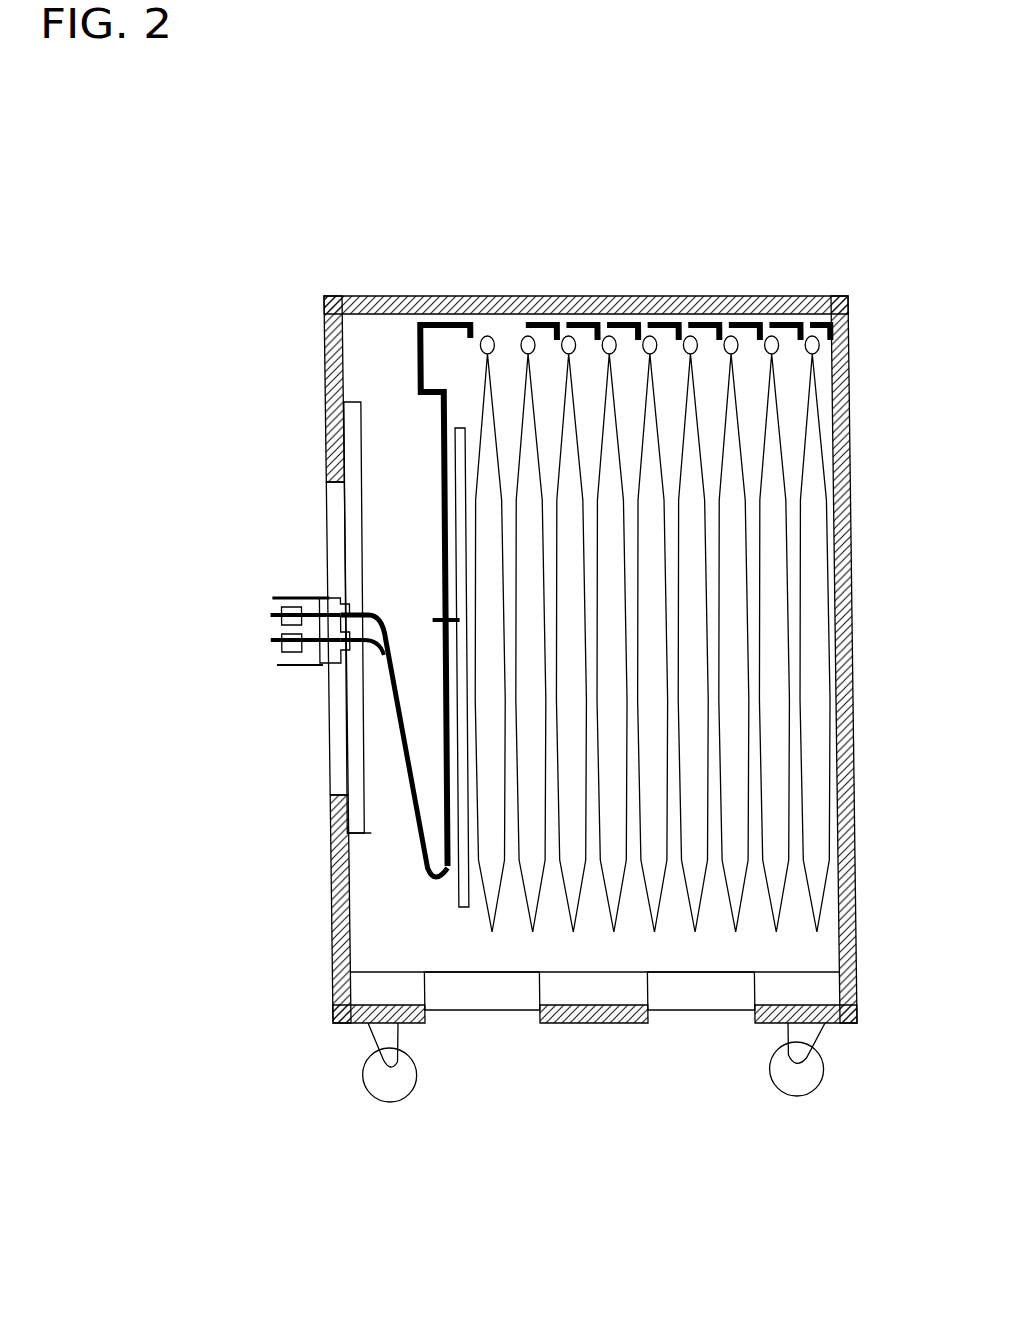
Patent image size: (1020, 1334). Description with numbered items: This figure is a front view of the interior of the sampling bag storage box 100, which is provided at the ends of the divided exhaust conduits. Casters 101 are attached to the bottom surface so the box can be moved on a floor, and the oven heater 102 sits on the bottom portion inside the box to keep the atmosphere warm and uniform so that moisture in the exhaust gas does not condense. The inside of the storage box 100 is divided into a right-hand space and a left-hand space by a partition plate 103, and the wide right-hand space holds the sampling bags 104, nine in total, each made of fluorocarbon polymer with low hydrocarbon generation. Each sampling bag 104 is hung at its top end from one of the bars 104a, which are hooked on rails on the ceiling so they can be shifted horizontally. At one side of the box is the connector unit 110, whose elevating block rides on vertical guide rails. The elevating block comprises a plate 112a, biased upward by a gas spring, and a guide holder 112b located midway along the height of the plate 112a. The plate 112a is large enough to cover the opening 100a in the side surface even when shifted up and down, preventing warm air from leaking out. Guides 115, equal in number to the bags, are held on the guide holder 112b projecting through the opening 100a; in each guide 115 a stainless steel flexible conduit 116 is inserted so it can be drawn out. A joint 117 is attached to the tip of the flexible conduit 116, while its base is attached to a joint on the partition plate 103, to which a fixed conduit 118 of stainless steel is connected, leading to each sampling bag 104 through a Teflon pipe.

The sampling bag storage box 100 is at (583, 295).
The opening 100a is at (327, 491).
The casters 101 is at (387, 1088).
The oven heater 102 is at (468, 998).
The partition plate 103 is at (448, 872).
The sampling bags 104 is at (488, 417).
The bars 104a is at (735, 342).
The connector unit 110 is at (290, 698).
The plate 112a is at (357, 769).
The guide holder 112b is at (325, 597).
The guides 115 is at (370, 605).
The flexible conduit 116 is at (403, 782).
The joint 117 is at (277, 665).
The fixed conduit 118 is at (420, 340).